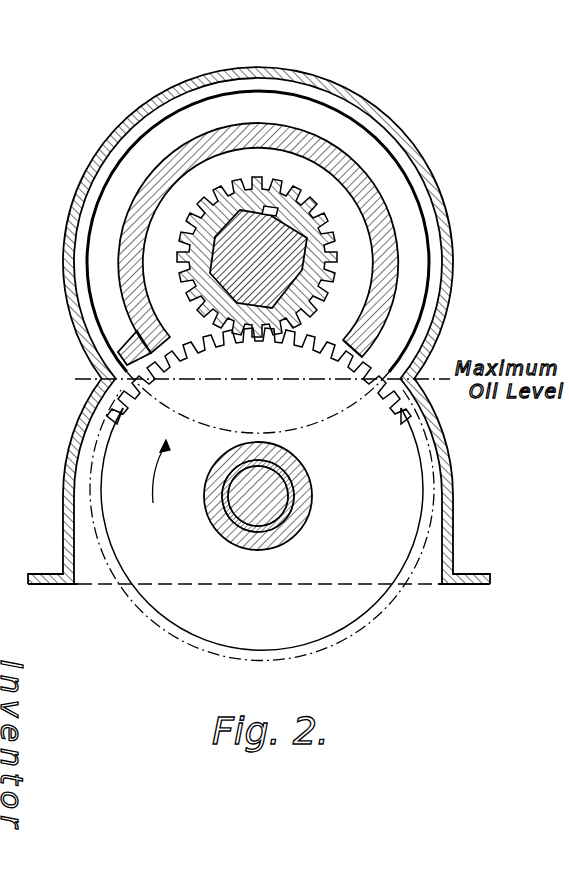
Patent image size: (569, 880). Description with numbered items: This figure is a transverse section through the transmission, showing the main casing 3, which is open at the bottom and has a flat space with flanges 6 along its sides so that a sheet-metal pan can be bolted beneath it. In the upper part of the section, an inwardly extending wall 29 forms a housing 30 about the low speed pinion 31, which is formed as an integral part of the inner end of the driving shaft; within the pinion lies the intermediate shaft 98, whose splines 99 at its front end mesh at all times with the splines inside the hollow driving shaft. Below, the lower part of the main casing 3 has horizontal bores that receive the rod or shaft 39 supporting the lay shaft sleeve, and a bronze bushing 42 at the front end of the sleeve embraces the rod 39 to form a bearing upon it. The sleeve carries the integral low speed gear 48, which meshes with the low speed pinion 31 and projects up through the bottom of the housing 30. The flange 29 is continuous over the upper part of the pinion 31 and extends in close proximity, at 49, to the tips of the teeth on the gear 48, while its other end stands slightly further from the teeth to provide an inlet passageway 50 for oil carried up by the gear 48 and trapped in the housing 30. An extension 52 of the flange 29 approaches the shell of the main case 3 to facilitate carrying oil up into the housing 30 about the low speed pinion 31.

The main casing 3 is at (97, 395).
The flanges 6 is at (47, 575).
The inwardly extending wall 29 is at (225, 239).
The housing 30 is at (199, 181).
The low speed pinion 31 is at (345, 246).
The rod or shaft 39 is at (285, 490).
The bronze bushing 42 is at (291, 514).
The low speed gear 48 is at (397, 462).
The close proximity point of flange 49 is at (357, 348).
The inlet passageway 50 is at (120, 357).
The extension of flange 52 is at (130, 350).
The intermediate shaft 98 is at (243, 214).
The splines 99 is at (272, 210).